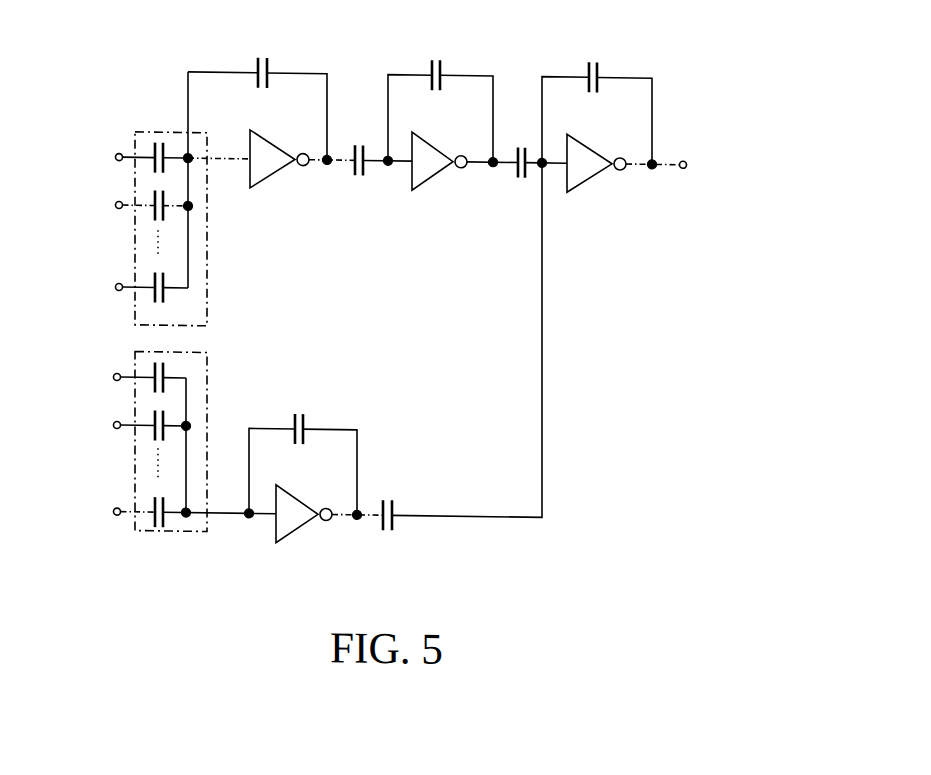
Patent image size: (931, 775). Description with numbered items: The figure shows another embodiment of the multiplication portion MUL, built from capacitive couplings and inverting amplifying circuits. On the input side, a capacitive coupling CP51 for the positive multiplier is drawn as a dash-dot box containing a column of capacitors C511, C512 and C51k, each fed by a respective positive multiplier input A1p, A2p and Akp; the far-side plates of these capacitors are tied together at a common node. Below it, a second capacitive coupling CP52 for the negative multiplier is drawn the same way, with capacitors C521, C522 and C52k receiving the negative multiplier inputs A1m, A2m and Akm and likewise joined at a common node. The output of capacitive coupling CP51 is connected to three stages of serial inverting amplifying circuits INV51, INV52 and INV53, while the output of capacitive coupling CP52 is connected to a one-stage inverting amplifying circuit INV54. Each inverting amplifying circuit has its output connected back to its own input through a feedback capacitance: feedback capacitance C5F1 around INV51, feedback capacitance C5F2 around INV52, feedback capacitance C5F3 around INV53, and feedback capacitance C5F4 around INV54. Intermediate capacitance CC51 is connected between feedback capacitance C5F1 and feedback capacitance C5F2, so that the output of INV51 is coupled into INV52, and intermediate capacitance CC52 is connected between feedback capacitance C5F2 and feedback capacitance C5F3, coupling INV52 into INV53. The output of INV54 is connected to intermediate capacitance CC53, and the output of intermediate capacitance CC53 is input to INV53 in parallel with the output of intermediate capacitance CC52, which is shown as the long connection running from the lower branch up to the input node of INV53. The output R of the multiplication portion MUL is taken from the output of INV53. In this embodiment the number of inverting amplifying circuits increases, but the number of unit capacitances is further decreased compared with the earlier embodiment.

The multiplication portion MUL is at (636, 38).
The capacitive coupling for the positive multiplier CP51 is at (187, 126).
The capacitive coupling for the negative multiplier CP52 is at (194, 532).
The capacitor of capacitive coupling CP51 C511 is at (150, 145).
The capacitor of capacitive coupling CP51 C512 is at (165, 211).
The capacitor of capacitive coupling CP51 C51k is at (167, 285).
The capacitor of capacitive coupling CP52 C521 is at (162, 360).
The capacitor of capacitive coupling CP52 C522 is at (162, 408).
The capacitor of capacitive coupling CP52 C52k is at (162, 530).
The feedback capacitance C5F1 is at (257, 91).
The feedback capacitance C5F2 is at (440, 93).
The feedback capacitance C5F3 is at (597, 96).
The feedback capacitance C5F4 is at (327, 446).
The intermediate capacitance CC51 is at (360, 142).
The intermediate capacitance CC52 is at (517, 144).
The intermediate capacitance CC53 is at (437, 346).
The inverting amplifying circuit INV51 is at (267, 169).
The inverting amplifying circuit INV52 is at (453, 174).
The inverting amplifying circuit INV53 is at (608, 176).
The inverting amplifying circuit INV54 is at (303, 525).
The output R is at (657, 138).
The positive multiplier input A1p is at (79, 149).
The positive multiplier input A2p is at (79, 205).
The positive multiplier input Akp is at (79, 285).
The negative multiplier input A1m is at (76, 370).
The negative multiplier input A2m is at (76, 428).
The negative multiplier input Akm is at (76, 515).